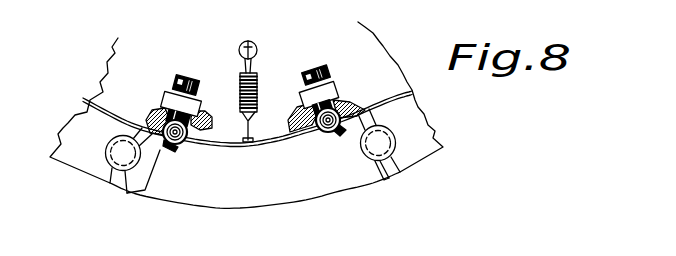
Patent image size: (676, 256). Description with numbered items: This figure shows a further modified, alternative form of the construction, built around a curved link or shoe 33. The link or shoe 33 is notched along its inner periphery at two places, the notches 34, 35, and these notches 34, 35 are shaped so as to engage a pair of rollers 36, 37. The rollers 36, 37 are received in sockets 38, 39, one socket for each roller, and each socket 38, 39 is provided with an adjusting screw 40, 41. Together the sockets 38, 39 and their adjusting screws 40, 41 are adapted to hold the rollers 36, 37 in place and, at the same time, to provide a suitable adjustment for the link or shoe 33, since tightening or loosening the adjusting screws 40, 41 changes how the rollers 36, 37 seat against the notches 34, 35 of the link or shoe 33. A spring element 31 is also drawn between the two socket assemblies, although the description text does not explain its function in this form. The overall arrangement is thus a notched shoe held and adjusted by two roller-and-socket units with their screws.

The spring 31 is at (258, 90).
The link or shoe 33 is at (255, 186).
The notch 34 is at (150, 176).
The notch 35 is at (348, 126).
The roller 36 is at (157, 112).
The roller 37 is at (350, 102).
The socket 38 is at (197, 117).
The socket 39 is at (340, 94).
The adjusting screw 40 is at (177, 78).
The adjusting screw 41 is at (307, 72).